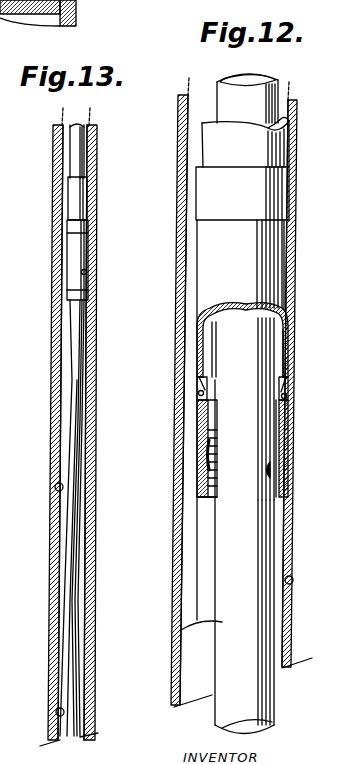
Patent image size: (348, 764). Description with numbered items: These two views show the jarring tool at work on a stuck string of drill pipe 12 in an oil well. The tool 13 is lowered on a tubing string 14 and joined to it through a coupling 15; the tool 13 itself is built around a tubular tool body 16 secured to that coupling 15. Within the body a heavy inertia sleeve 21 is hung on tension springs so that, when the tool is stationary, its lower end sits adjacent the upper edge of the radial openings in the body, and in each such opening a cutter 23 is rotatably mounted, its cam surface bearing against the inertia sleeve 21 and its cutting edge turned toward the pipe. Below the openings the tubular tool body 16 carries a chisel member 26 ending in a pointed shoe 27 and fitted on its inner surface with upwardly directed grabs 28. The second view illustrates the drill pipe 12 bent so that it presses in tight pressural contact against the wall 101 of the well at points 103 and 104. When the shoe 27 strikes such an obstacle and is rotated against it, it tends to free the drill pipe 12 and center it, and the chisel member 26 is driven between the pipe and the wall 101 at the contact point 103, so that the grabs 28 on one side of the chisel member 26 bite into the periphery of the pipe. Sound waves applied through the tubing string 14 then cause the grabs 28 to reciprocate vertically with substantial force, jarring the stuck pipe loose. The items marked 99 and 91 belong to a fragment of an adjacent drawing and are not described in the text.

In FIG. 13, the drill pipe 12 is at (72, 386).
In FIG. 12, the drill pipe 12 is at (234, 98).
In FIG. 13, the tool 13 is at (66, 256).
In FIG. 12, the tool 13 is at (270, 268).
In FIG. 13, the tubing string 14 is at (88, 193).
In FIG. 12, the tubing string 14 is at (268, 143).
In FIG. 12, the coupling 15 is at (272, 197).
In FIG. 12, the tubular tool body 16 is at (284, 347).
In FIG. 12, the inertia sleeve 21 is at (202, 348).
In FIG. 12, the cutter 23 is at (197, 389).
In FIG. 12, the chisel member 26 is at (192, 461).
In FIG. 12, the shoe 27 is at (200, 485).
In FIG. 12, the grabs 28 is at (287, 476).
In FIG. 13, the head block 99 is at (78, 9).
In FIG. 13, the body part 91 is at (8, 163).
In FIG. 13, the well wall 101 is at (56, 490).
In FIG. 12, the well wall 101 is at (292, 578).
In FIG. 13, the contact point 103 is at (86, 274).
In FIG. 13, the contact point 104 is at (58, 712).